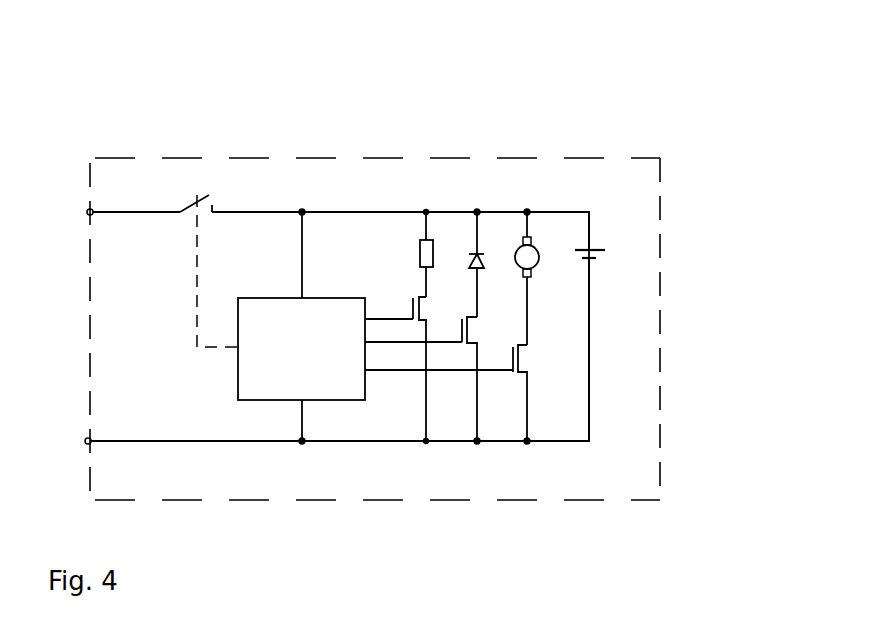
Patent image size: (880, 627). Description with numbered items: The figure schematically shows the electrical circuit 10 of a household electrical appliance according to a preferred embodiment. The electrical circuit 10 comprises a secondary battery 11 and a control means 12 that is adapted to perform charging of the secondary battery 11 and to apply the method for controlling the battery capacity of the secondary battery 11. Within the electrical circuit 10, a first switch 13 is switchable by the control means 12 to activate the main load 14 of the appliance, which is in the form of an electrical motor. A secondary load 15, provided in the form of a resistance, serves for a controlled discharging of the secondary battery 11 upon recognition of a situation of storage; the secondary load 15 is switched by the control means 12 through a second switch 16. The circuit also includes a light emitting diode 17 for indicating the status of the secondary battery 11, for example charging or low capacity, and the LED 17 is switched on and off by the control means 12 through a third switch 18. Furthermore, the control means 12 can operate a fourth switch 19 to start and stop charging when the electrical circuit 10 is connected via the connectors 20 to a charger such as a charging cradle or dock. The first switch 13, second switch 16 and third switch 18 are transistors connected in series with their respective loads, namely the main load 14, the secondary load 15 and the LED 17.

The electrical circuit 10 is at (640, 500).
The secondary battery 11 is at (607, 258).
The control means 12 is at (348, 387).
The first switch 13 is at (527, 357).
The main load 14 is at (538, 247).
The secondary load 15 is at (433, 247).
The second switch 16 is at (435, 306).
The light emitting diode 17 is at (487, 247).
The third switch 18 is at (473, 329).
The fourth switch 19 is at (223, 193).
The connectors 20 is at (87, 210).